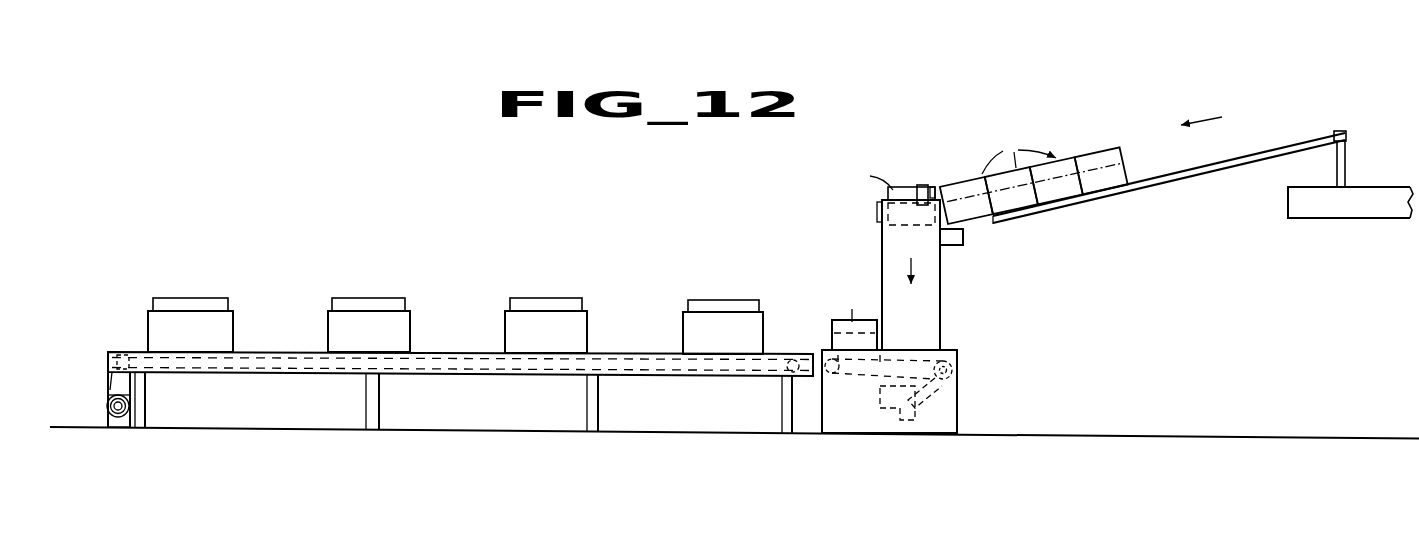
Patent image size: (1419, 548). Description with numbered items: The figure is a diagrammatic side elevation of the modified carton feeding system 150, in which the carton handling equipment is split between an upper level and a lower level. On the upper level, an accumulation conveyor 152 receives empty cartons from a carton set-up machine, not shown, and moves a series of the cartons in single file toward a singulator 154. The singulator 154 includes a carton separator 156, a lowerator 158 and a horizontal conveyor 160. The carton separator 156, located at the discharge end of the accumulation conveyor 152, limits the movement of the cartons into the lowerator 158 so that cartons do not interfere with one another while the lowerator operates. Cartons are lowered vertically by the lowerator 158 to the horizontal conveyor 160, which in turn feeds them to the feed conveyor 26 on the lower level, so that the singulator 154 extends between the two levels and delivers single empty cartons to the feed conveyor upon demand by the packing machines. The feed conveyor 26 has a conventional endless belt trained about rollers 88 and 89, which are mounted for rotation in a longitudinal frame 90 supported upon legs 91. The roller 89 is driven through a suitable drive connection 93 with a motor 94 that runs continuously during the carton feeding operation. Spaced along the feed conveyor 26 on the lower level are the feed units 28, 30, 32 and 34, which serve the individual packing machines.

The feed conveyor 26 is at (438, 337).
The feed unit 28 is at (737, 338).
The feed unit 30 is at (555, 338).
The feed unit 32 is at (381, 338).
The feed unit 34 is at (204, 338).
The roller 88 is at (790, 352).
The roller 89 is at (108, 354).
The longitudinal frame 90 is at (278, 355).
The legs 91 is at (145, 399).
The drive connection 93 is at (112, 381).
The motor 94 is at (108, 404).
The modified carton feeding system 150 is at (914, 296).
The accumulation conveyor 152 is at (1160, 184).
The singulator 154 is at (947, 303).
The carton separator 156 is at (968, 237).
The lowerator 158 is at (880, 272).
The horizontal conveyor 160 is at (960, 367).